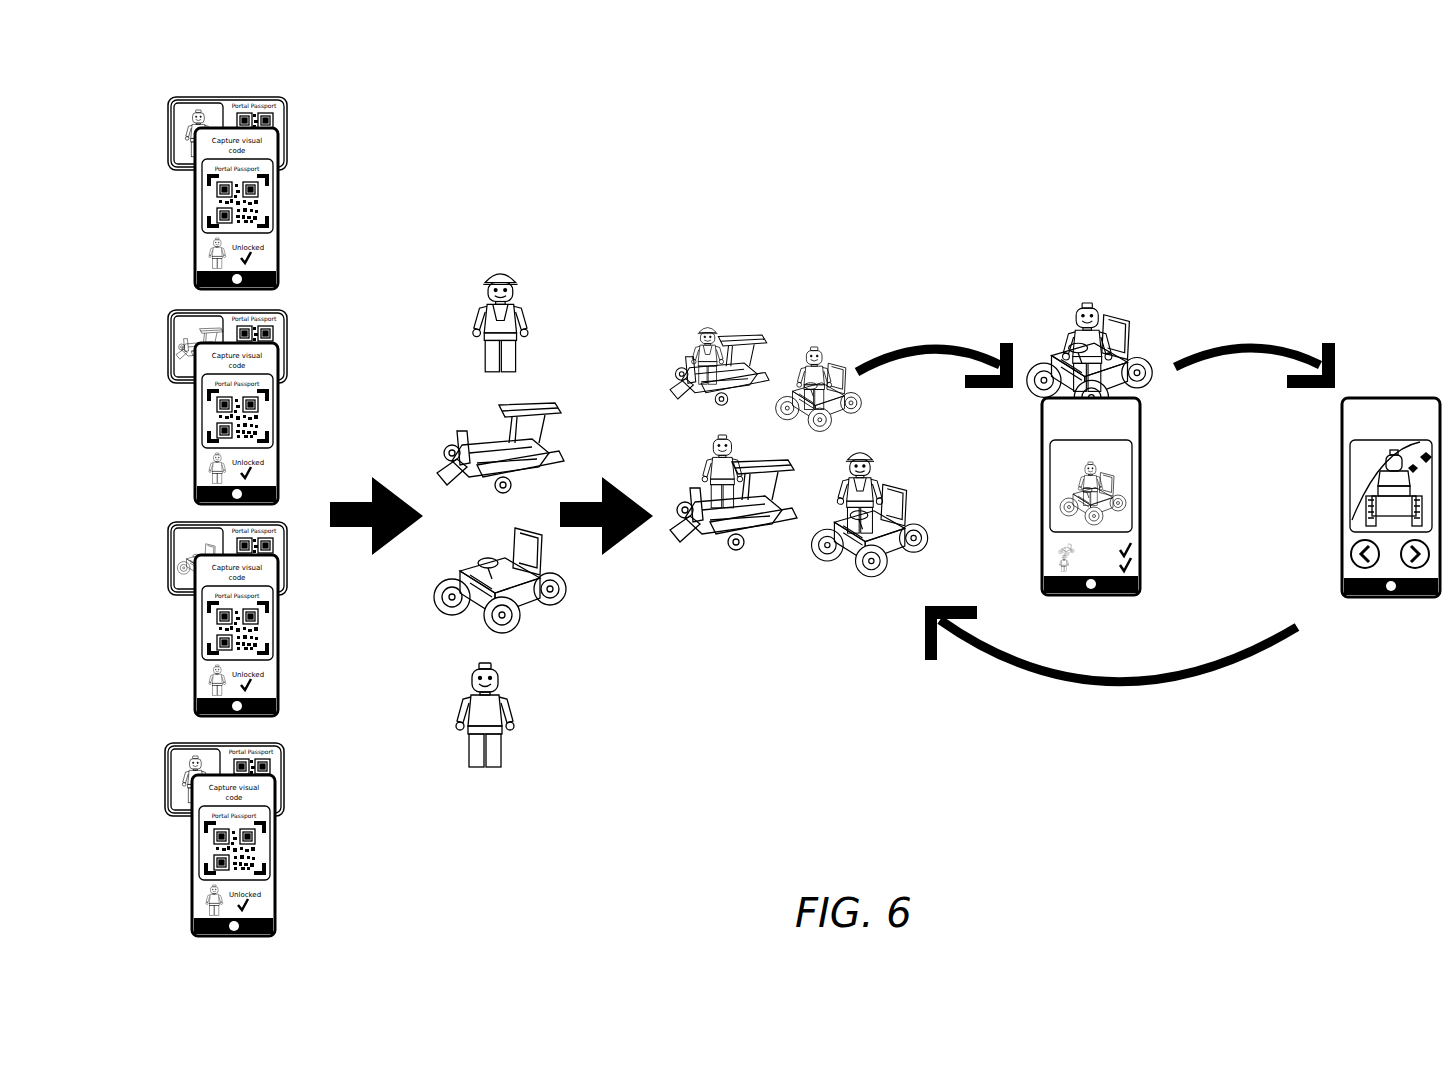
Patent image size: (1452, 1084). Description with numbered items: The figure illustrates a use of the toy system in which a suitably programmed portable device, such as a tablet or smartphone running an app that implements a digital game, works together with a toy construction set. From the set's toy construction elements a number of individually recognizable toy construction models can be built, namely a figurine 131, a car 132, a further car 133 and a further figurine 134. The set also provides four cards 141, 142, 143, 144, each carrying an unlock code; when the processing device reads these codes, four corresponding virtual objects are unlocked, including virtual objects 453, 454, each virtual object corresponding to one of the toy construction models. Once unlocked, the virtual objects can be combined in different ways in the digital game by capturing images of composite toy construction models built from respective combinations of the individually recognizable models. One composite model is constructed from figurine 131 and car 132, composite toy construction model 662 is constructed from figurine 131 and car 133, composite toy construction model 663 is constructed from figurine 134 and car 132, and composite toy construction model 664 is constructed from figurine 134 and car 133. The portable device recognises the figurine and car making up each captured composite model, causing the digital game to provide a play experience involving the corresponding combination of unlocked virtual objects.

The figurine 131 is at (510, 728).
The car 132 is at (567, 588).
The car 133 is at (518, 408).
The figurine 134 is at (520, 310).
The card 141 is at (283, 775).
The card 142 is at (283, 553).
The card 143 is at (283, 345).
The card 144 is at (287, 128).
The virtual object 453 is at (205, 463).
The virtual object 454 is at (205, 250).
The composite toy construction model 662 is at (733, 570).
The composite toy construction model 663 is at (910, 512).
The composite toy construction model 664 is at (752, 358).